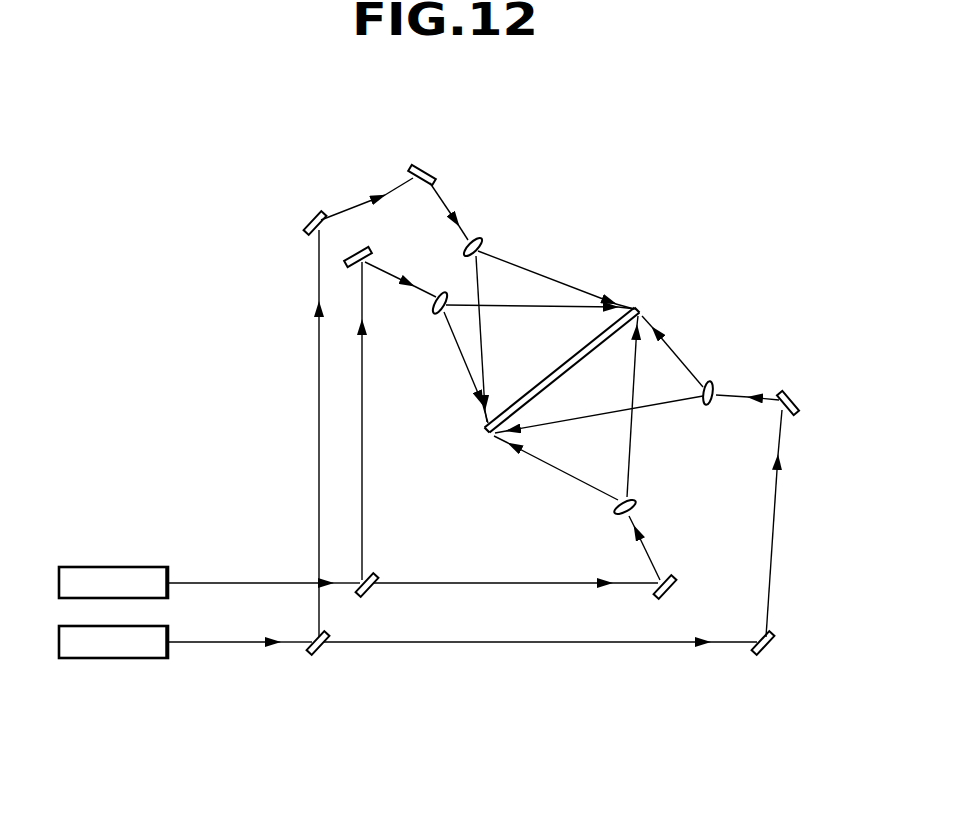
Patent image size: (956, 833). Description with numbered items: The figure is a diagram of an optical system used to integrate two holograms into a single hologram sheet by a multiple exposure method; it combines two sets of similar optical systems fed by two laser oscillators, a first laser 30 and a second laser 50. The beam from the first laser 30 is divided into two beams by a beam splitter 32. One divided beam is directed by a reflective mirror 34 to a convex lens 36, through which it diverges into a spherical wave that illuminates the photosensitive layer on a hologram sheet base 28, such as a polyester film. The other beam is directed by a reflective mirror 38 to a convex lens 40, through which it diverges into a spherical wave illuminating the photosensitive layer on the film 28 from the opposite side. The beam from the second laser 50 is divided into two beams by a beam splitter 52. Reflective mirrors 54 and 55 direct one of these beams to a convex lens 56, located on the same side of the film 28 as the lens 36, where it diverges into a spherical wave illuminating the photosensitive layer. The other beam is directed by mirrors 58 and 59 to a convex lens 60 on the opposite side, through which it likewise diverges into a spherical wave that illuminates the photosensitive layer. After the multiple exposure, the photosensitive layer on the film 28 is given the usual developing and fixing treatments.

The hologram sheet base 28 is at (532, 396).
The first laser 30 is at (163, 566).
The beam splitter 32 is at (374, 596).
The reflective mirror 34 is at (673, 596).
The convex lens 36 is at (637, 503).
The reflective mirror 38 is at (366, 248).
The convex lens 40 is at (433, 313).
The second laser 50 is at (160, 659).
The beam splitter 52 is at (326, 655).
The reflective mirror 54 is at (772, 655).
The reflective mirror 55 is at (792, 393).
The convex lens 56 is at (718, 382).
The reflective mirror 58 is at (312, 212).
The reflective mirror 59 is at (437, 173).
The convex lens 60 is at (484, 240).